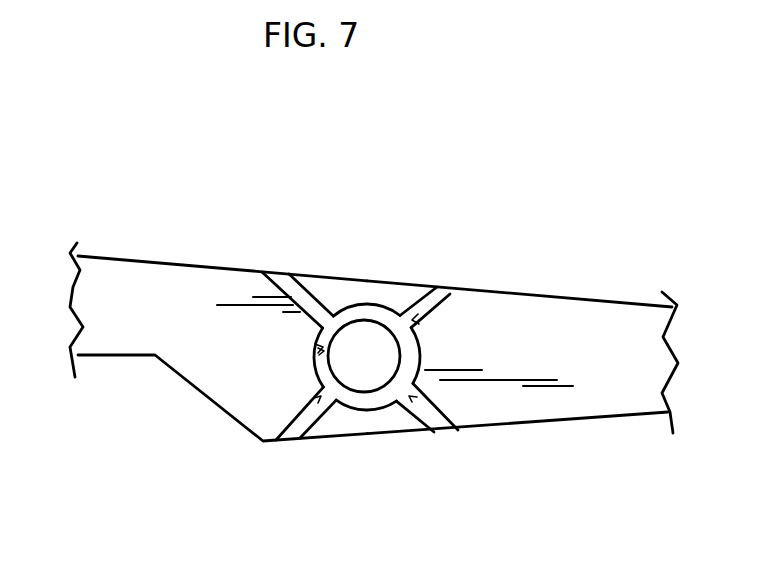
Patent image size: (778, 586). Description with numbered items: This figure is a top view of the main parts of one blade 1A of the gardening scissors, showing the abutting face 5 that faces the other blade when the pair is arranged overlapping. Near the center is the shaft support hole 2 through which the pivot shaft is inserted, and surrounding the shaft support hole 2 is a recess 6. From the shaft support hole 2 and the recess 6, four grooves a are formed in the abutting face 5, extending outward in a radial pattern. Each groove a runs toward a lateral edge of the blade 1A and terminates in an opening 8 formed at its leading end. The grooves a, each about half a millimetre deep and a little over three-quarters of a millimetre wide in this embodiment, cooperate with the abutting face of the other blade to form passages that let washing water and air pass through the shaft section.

The blade 1A is at (158, 258).
The abutting face 5 is at (537, 378).
The shaft support hole 2 is at (365, 345).
The opening 8 is at (277, 273).
The groove a is at (304, 290).
The recess 6 is at (318, 352).